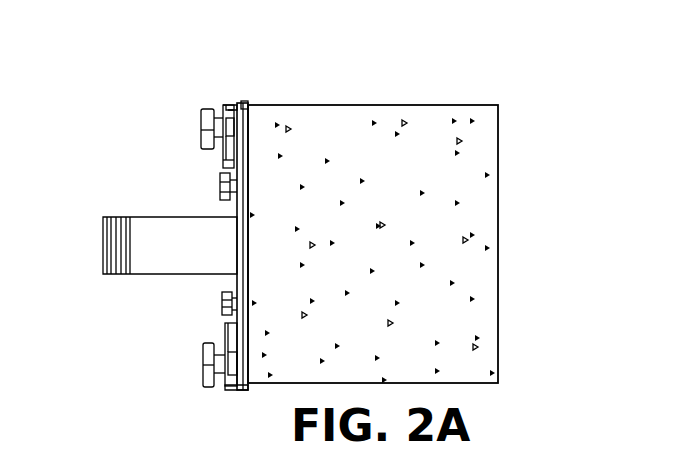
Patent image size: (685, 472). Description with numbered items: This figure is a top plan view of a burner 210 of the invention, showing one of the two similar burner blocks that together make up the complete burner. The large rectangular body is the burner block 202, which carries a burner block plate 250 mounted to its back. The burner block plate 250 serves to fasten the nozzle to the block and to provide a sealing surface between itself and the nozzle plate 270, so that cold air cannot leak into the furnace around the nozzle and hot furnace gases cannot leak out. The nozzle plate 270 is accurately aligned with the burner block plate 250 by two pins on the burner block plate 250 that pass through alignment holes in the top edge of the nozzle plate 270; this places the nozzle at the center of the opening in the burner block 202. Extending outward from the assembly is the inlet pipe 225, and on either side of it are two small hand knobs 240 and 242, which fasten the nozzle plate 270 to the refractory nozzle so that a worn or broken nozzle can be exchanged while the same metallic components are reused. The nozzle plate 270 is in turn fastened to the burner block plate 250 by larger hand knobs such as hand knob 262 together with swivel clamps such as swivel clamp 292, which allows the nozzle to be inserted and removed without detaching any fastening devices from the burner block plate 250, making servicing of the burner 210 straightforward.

The burner block 202 is at (467, 118).
The burner 210 is at (566, 111).
The inlet pipe 225 is at (137, 226).
The small hand knob 240 is at (222, 297).
The small hand knob 242 is at (221, 178).
The burner block plate 250 is at (245, 103).
The larger hand knob 262 is at (203, 110).
The nozzle plate 270 is at (226, 324).
The swivel clamp 292 is at (229, 105).